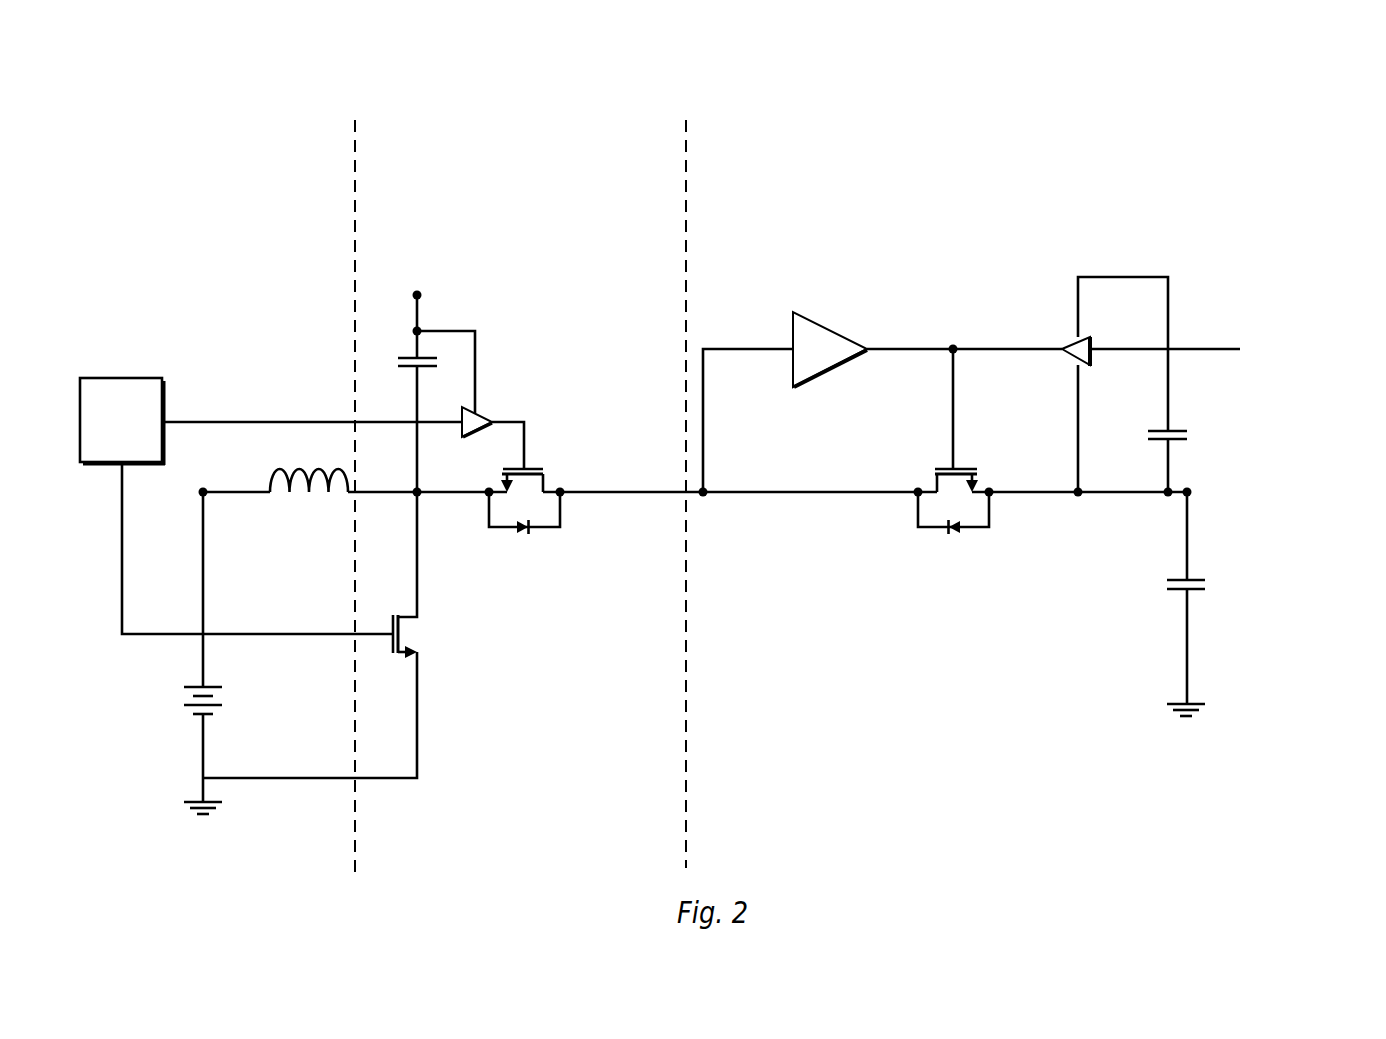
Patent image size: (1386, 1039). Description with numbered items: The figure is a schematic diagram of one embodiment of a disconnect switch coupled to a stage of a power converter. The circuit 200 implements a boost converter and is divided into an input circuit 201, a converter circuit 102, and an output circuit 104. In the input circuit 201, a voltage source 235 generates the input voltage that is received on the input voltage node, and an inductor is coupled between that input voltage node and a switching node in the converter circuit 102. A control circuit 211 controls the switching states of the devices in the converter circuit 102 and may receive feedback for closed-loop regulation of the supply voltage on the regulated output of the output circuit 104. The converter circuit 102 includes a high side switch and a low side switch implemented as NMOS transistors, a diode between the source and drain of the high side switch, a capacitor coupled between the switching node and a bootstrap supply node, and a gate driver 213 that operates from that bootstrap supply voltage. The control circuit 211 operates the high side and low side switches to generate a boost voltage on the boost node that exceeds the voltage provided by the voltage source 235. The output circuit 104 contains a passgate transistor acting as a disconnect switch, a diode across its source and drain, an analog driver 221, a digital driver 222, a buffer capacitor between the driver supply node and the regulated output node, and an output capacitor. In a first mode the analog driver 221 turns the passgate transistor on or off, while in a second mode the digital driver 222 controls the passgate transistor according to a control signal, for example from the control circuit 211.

The circuit 200 is at (750, 57).
The input circuit 201 is at (267, 472).
The converter circuit 102 is at (535, 344).
The output circuit 104 is at (1033, 422).
The control circuit 211 is at (122, 421).
The gate driver 213 is at (488, 407).
The analog driver 221 is at (810, 313).
The digital driver 222 is at (1070, 338).
The voltage source 235 is at (147, 700).